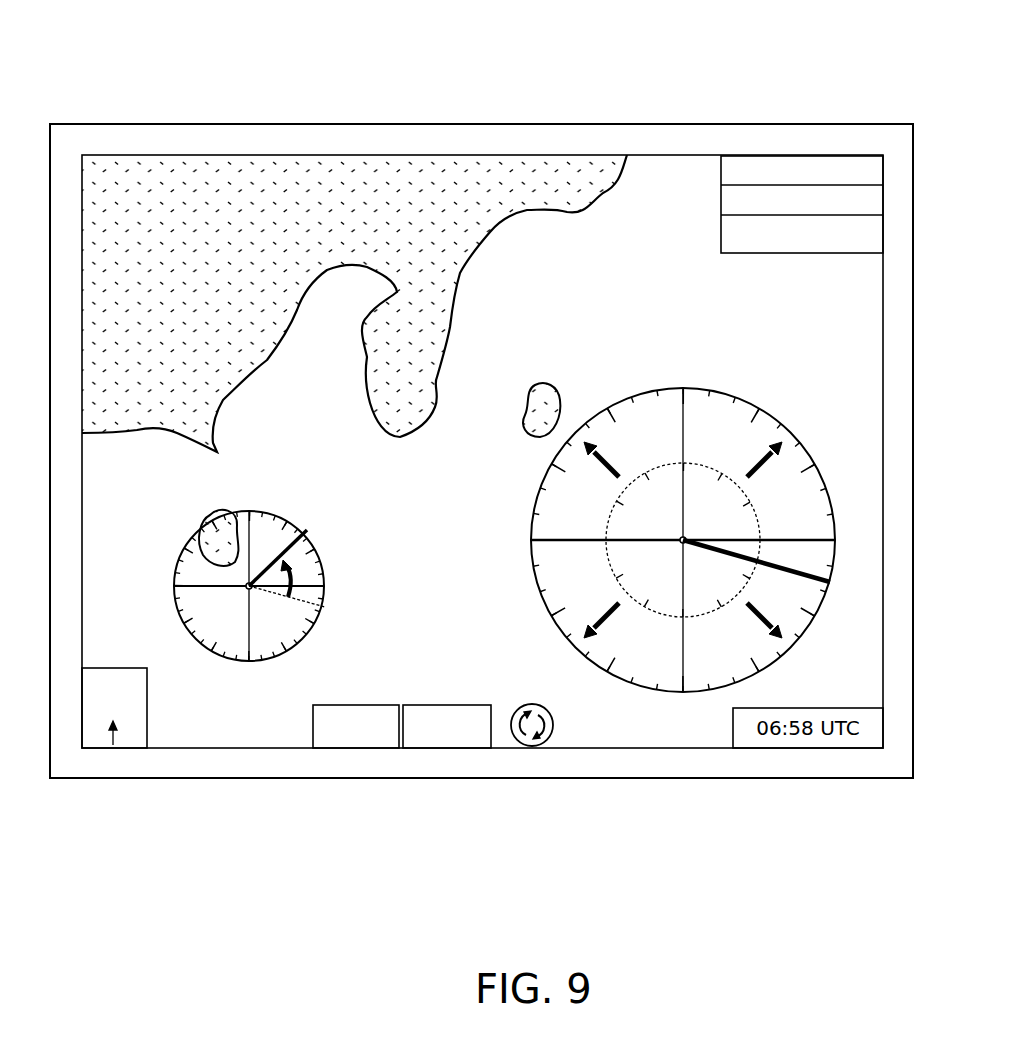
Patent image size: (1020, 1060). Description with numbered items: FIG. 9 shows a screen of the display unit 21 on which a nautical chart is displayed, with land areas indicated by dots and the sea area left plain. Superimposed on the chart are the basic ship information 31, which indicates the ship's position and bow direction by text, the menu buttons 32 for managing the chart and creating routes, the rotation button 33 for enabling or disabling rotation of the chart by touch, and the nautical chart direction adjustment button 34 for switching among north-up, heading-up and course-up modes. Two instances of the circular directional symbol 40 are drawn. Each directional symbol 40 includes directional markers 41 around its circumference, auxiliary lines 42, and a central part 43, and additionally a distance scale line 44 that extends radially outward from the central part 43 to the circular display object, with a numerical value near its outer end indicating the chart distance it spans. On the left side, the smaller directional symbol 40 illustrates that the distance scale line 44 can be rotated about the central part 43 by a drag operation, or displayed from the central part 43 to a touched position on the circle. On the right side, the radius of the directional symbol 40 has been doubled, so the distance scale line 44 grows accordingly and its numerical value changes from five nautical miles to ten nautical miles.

The display unit 21 is at (471, 392).
The basic ship information 31 is at (802, 144).
The menu buttons 32 is at (402, 784).
The rotation button 33 is at (520, 782).
The nautical chart direction adjustment button 34 is at (102, 759).
The directional symbol 40 is at (507, 629).
The directional markers 41 is at (496, 601).
The auxiliary lines 42 is at (504, 610).
The central part 43 is at (495, 685).
The distance scale line 44 is at (562, 562).